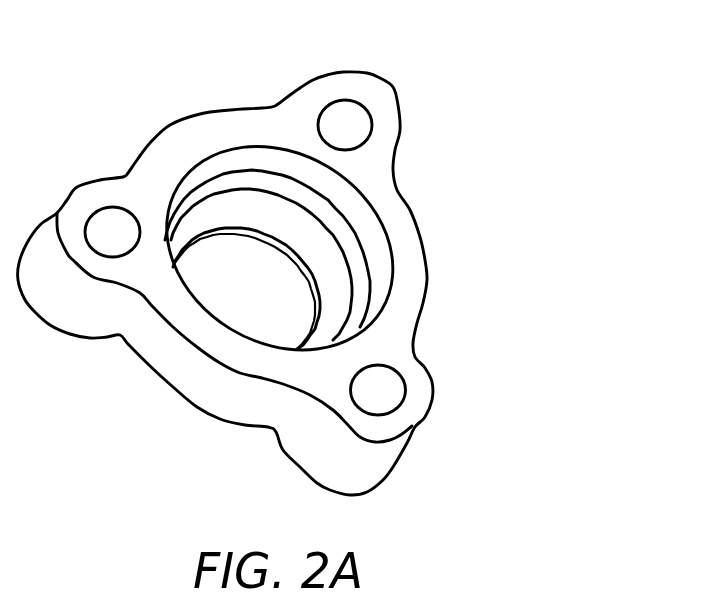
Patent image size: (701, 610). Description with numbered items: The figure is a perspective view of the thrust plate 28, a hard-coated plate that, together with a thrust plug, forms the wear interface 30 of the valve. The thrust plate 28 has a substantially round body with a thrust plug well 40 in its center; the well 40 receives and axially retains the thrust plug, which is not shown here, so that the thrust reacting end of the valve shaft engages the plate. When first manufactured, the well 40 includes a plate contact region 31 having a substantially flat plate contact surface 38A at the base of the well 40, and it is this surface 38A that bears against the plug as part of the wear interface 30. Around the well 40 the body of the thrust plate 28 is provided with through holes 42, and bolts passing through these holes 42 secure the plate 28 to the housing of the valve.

The thrust plate 28 is at (499, 141).
The wear interface 30 is at (348, 258).
The plate contact region 31 is at (273, 267).
The plate contact surface 38A is at (214, 256).
The thrust plug well 40 is at (410, 298).
The through holes 42 is at (355, 124).